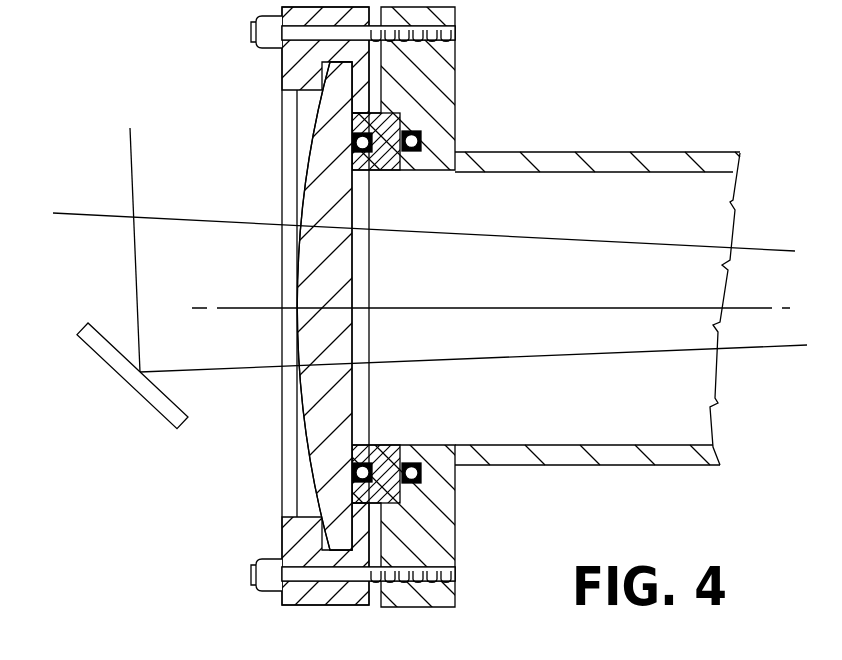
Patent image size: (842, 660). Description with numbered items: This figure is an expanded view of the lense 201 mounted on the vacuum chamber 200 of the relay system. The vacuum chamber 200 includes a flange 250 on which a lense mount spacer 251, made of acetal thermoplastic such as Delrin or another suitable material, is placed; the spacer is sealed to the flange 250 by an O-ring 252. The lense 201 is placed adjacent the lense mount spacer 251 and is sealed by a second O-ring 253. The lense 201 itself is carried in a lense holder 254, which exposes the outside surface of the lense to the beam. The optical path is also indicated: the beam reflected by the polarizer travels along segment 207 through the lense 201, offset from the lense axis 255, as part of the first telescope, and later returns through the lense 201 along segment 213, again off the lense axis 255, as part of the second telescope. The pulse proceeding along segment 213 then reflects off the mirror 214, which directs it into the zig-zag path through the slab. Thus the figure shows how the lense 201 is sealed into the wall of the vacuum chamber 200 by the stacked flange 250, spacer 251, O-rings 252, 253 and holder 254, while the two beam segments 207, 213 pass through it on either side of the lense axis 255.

The vacuum chamber 200 is at (620, 152).
The lense 201 is at (323, 183).
The segment 207 is at (530, 222).
The segment 213 is at (473, 378).
The mirror 214 is at (137, 378).
The flange 250 is at (458, 50).
The lense mount spacer 251 is at (412, 128).
The O-ring 252 is at (375, 140).
The O-ring 253 is at (384, 110).
The lense holder 254 is at (282, 54).
The lense axis 255 is at (582, 307).